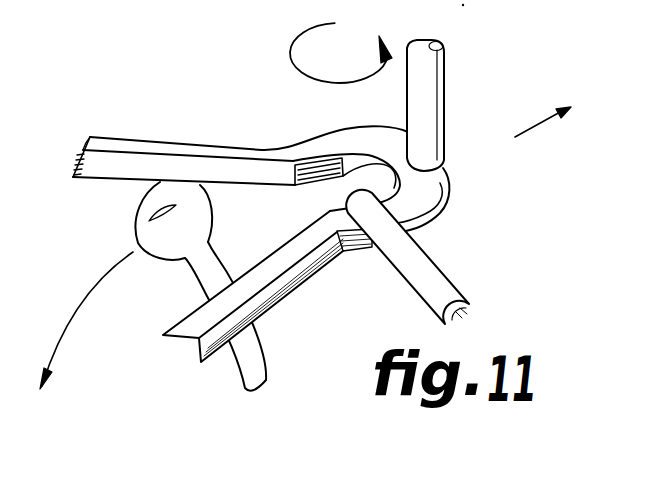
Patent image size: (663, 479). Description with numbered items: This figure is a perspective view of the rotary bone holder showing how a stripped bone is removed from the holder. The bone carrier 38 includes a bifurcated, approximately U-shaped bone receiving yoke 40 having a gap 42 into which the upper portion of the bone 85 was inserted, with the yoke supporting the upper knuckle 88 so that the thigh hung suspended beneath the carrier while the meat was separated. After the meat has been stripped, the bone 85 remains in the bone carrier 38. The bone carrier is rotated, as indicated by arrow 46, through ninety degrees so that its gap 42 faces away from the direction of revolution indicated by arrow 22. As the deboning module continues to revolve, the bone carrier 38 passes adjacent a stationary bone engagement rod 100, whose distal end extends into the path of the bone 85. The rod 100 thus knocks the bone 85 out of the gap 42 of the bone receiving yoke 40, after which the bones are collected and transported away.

The arrow indicating direction of revolution 22 is at (541, 118).
The bone carrier 38 is at (435, 104).
The bone receiving yoke 40 is at (196, 147).
The gap 42 is at (347, 178).
The arrow indicating rotation 46 is at (287, 58).
The bone 85 is at (207, 276).
The upper knuckle 88 is at (157, 193).
The bone engagement rod 100 is at (423, 270).